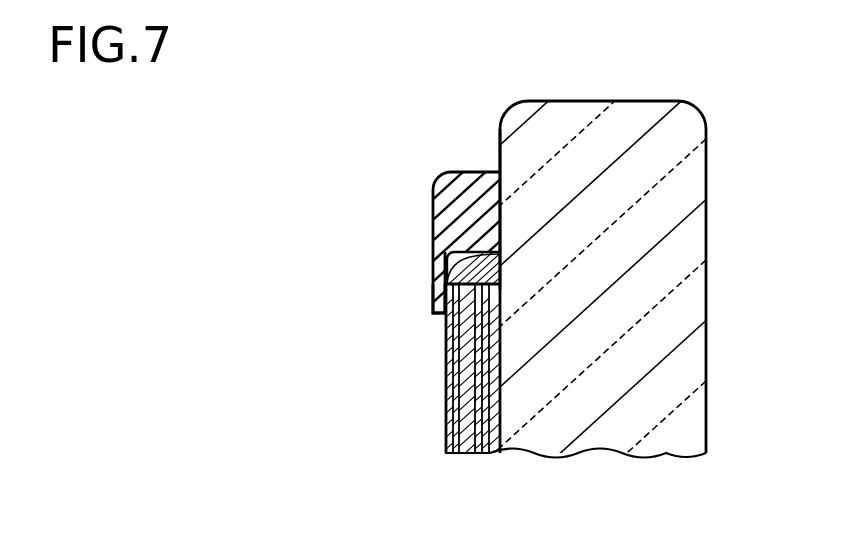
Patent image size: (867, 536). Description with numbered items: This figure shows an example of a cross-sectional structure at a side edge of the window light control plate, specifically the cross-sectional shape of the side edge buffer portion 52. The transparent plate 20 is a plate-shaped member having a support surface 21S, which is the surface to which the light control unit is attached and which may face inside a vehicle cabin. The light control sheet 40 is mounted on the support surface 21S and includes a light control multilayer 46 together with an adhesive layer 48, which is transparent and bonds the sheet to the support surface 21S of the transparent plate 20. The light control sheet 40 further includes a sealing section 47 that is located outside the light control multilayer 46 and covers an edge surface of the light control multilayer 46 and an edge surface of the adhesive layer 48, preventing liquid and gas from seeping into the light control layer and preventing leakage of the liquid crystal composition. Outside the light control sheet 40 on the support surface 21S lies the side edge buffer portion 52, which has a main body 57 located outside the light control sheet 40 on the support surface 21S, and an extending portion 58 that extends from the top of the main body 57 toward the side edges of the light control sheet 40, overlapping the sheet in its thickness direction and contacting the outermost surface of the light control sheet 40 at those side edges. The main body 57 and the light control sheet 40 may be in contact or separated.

The transparent plate 20 is at (707, 178).
The support surface 21S is at (498, 138).
The main body 57 is at (460, 172).
The side edge buffer portion 52 is at (431, 221).
The extending portion 58 is at (431, 290).
The sealing section 47 is at (502, 272).
The light control sheet 40 is at (445, 377).
The light control multilayer 46 is at (467, 454).
The adhesive layer 48 is at (495, 454).